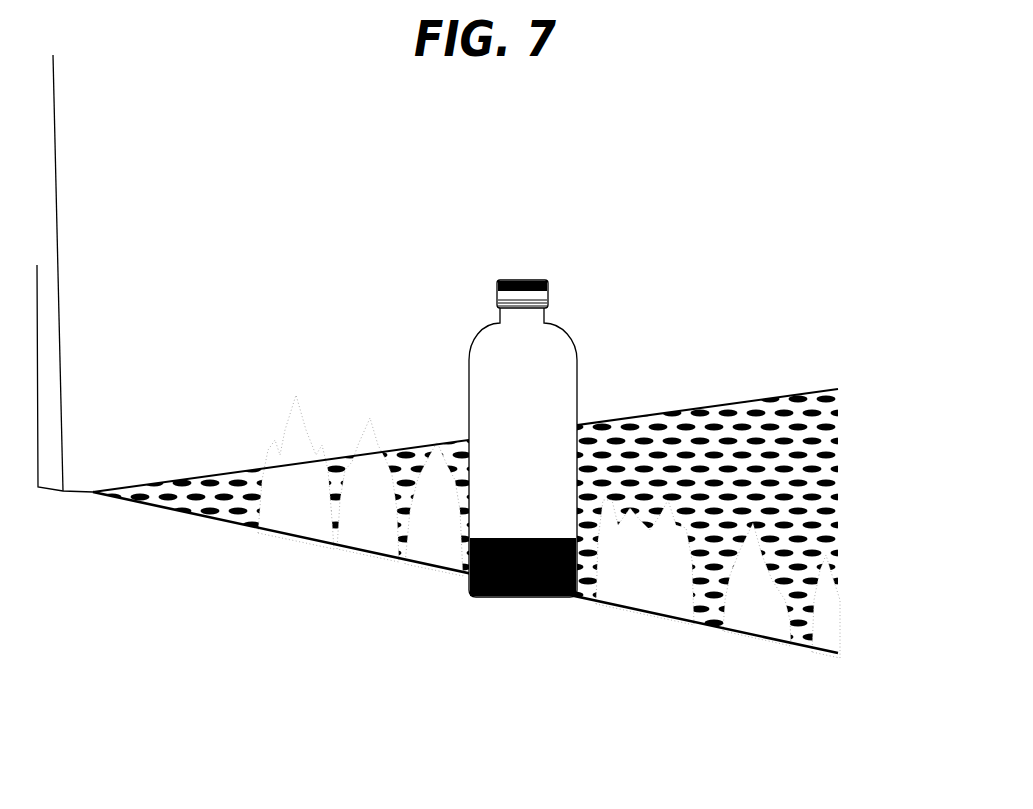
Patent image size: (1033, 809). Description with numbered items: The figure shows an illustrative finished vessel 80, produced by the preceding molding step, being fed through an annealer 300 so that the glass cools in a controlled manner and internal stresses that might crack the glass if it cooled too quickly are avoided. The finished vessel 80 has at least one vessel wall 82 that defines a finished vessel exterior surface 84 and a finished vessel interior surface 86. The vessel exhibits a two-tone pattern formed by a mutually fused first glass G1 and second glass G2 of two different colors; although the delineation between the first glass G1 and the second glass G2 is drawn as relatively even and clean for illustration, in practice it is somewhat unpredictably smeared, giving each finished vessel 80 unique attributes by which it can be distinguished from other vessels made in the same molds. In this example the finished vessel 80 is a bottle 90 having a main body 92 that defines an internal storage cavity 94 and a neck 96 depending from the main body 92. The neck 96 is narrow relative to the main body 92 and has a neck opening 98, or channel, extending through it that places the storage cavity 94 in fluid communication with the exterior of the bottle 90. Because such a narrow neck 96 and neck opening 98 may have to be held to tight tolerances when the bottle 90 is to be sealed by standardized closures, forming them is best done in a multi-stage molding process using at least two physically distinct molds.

The annealer 300 is at (240, 414).
The finished vessel 80 is at (518, 459).
The bottle 90 is at (518, 459).
The neck opening 98 is at (518, 274).
The neck 96 is at (547, 316).
The main body 92 is at (476, 416).
The finished vessel interior surface 86 is at (558, 436).
The vessel wall 82 is at (496, 440).
The finished vessel exterior surface 84 is at (490, 492).
The internal storage cavity 94 is at (518, 500).
The first glass G1 is at (483, 370).
The second glass G2 is at (556, 598).